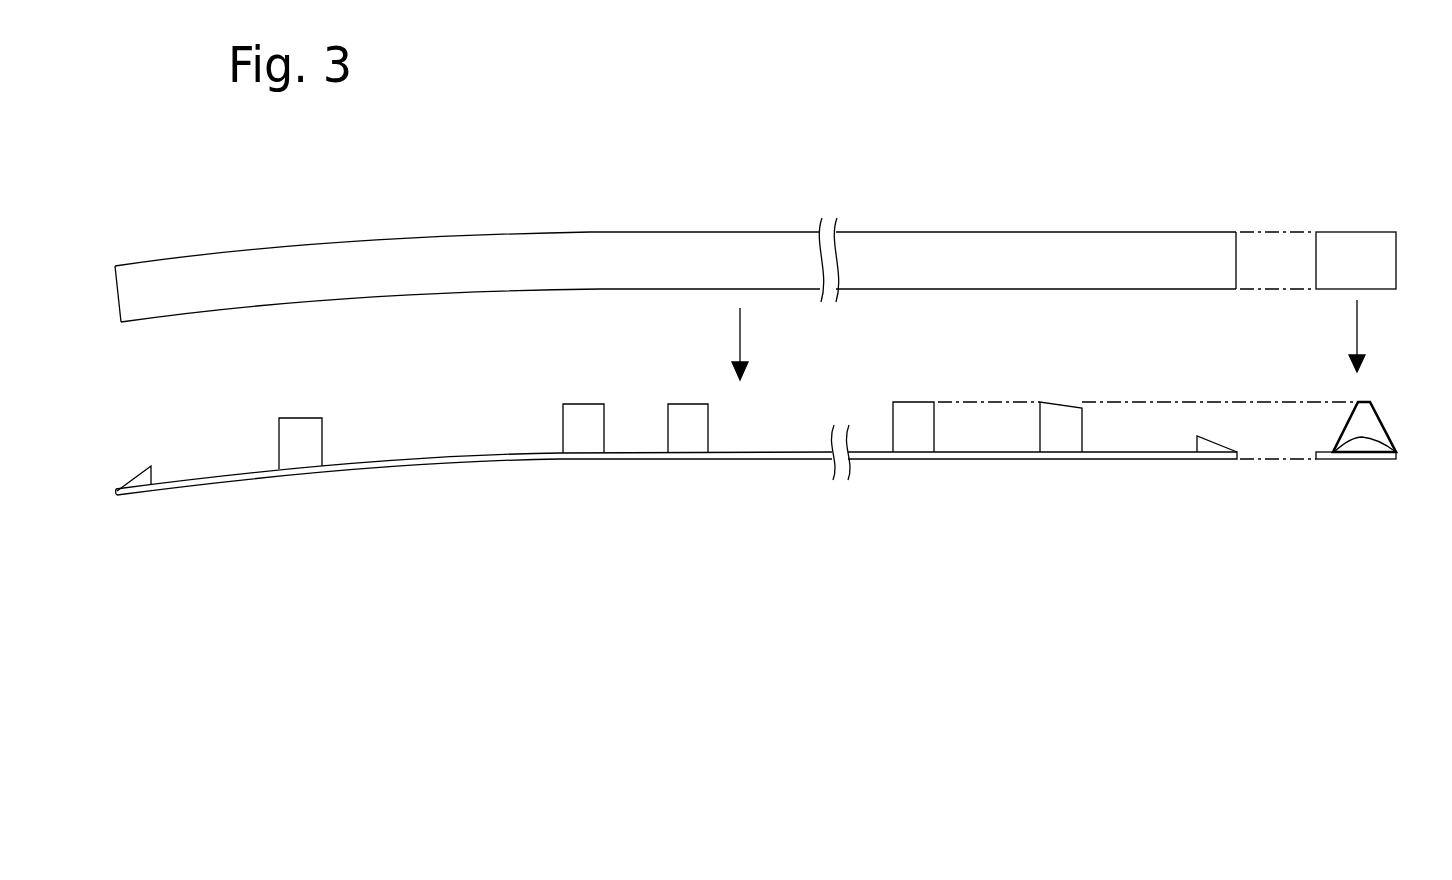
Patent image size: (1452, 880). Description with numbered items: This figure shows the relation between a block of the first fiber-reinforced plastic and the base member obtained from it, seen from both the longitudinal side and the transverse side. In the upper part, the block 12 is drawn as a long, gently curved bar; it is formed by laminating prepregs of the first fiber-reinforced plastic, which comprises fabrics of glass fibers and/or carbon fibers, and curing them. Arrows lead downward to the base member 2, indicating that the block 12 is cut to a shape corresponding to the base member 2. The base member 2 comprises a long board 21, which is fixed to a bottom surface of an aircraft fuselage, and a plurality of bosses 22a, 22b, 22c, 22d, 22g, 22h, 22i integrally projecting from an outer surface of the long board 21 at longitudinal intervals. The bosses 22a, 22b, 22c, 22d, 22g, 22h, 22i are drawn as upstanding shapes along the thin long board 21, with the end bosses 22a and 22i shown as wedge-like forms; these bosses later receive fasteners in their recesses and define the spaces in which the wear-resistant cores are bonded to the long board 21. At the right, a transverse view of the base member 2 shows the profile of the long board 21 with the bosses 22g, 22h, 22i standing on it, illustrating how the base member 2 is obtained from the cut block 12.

The base member 2 is at (751, 494).
The block 12 is at (917, 242).
The long board 21 is at (810, 461).
The boss 22a is at (143, 479).
The boss 22b is at (302, 462).
The boss 22c is at (587, 448).
The boss 22d is at (689, 446).
The boss 22g is at (912, 445).
The boss 22h is at (1059, 443).
The boss 22i is at (1208, 451).